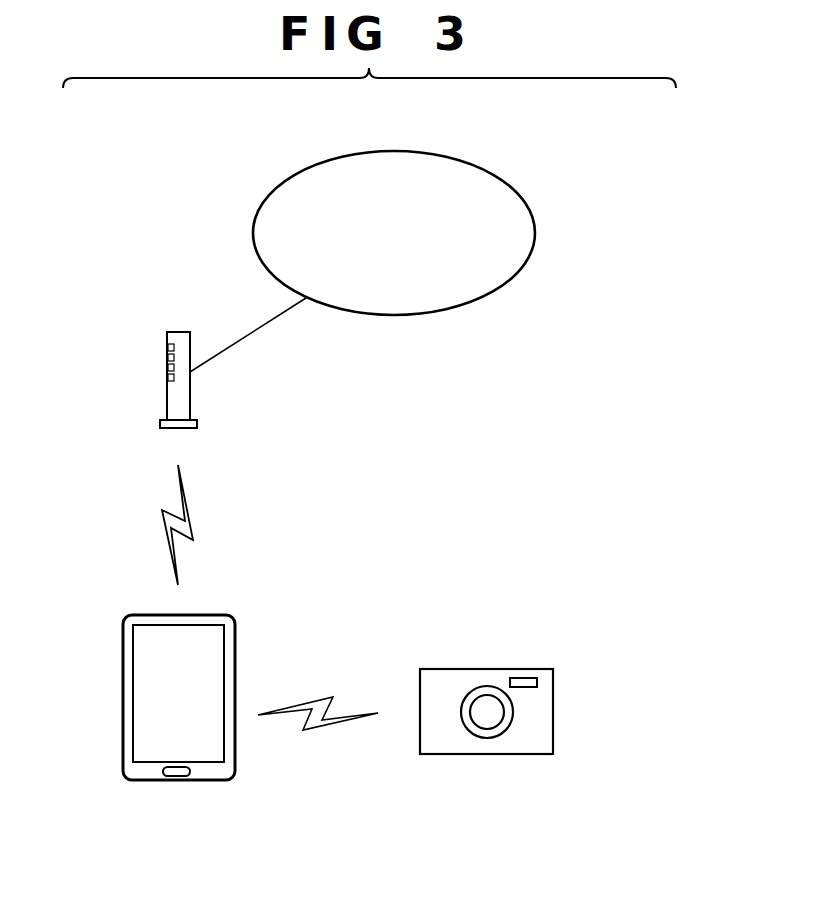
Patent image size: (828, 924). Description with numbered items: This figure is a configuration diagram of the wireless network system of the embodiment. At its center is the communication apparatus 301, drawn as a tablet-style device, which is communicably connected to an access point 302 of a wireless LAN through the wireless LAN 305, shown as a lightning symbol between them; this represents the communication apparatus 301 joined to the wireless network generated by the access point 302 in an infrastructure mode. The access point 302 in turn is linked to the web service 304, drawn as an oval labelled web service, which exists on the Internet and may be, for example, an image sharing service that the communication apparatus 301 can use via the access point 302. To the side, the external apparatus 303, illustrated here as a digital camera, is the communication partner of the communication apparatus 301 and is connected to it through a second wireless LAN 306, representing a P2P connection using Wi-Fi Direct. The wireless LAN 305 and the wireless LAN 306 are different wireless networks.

The communication apparatus 301 is at (235, 636).
The access point 302 is at (170, 331).
The external apparatus 303 is at (538, 669).
The web service 304 is at (519, 197).
The wireless LAN 305 is at (187, 521).
The wireless LAN 306 is at (314, 730).